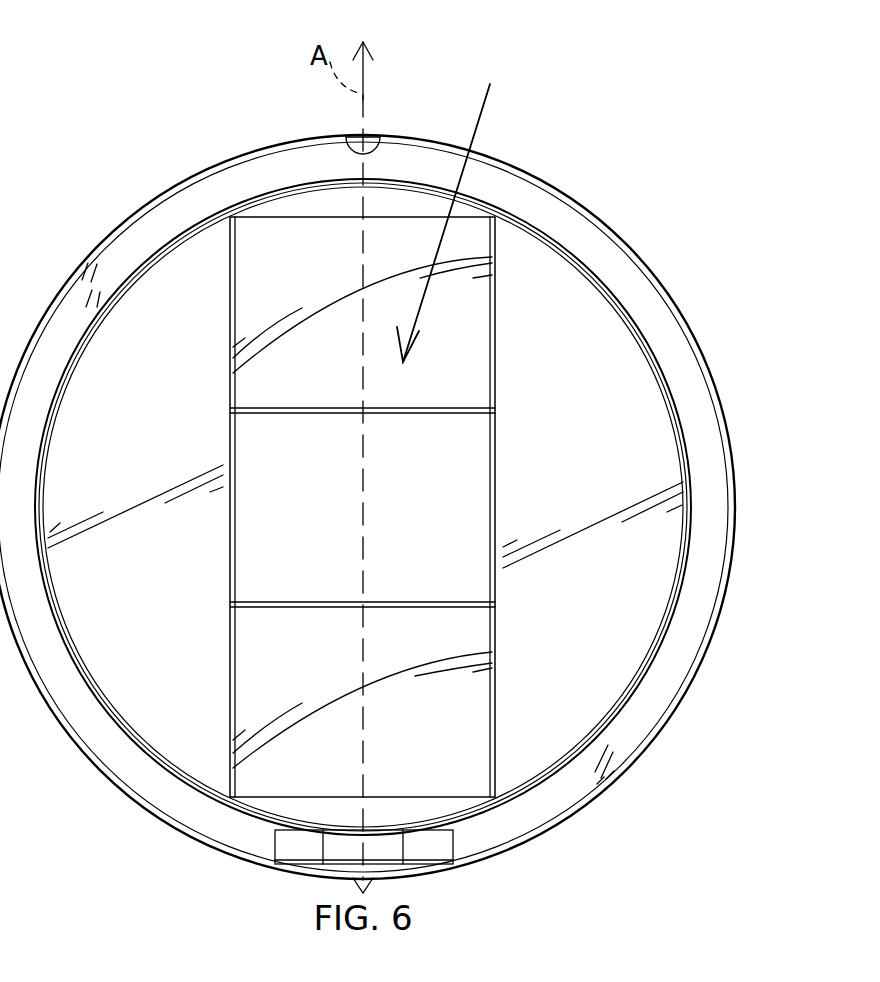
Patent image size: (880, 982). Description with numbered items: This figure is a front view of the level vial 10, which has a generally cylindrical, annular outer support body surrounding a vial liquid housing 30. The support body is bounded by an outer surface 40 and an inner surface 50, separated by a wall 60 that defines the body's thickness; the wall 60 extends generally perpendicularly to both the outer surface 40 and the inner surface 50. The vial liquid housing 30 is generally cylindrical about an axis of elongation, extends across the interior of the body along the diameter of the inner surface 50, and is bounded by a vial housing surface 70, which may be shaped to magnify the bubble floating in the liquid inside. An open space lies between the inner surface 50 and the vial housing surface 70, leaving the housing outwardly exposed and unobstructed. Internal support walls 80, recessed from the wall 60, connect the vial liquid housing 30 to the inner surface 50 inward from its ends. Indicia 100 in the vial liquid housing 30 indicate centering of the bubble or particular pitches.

The level vial 10 is at (633, 60).
The vial liquid housing 30 is at (454, 208).
The outer surface 40 is at (605, 222).
The inner surface 50 is at (665, 396).
The wall 60 is at (650, 312).
The vial housing surface 70 is at (230, 280).
The internal support wall 80 is at (165, 423).
The indicia 100 is at (320, 411).